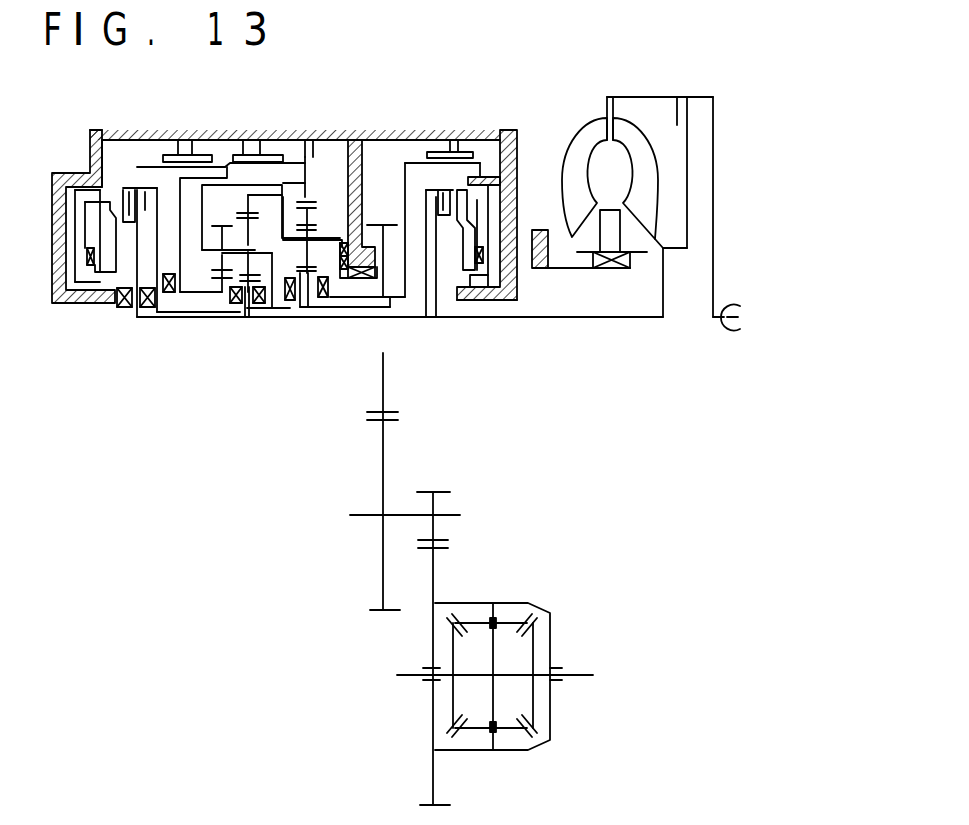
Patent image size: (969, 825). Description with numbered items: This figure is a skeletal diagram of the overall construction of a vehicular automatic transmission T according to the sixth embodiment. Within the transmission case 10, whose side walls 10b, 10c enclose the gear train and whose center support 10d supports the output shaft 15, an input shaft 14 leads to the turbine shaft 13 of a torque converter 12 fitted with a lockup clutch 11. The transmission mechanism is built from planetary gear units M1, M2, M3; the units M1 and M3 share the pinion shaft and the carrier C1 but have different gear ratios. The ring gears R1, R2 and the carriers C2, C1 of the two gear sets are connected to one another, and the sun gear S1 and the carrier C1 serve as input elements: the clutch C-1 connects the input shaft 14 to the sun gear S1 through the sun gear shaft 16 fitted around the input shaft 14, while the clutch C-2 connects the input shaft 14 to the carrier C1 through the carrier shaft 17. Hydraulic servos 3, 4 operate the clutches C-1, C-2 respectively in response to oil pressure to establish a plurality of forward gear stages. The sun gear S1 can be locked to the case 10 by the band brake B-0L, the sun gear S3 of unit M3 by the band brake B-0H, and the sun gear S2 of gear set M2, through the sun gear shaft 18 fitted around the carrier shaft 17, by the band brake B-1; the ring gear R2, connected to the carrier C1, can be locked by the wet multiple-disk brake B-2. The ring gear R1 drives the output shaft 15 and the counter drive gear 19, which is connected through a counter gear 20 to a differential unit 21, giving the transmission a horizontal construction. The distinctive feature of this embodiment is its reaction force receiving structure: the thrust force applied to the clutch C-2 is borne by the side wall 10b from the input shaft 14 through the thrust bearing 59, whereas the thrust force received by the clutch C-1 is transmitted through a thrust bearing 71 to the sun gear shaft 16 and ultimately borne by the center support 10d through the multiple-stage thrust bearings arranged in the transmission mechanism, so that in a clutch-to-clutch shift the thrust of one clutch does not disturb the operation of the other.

The transmission case 10 is at (103, 162).
The side wall of transmission case 10b is at (112, 156).
The side wall of transmission case 10c is at (488, 138).
The center support 10d is at (362, 152).
The automatic transmission T is at (405, 120).
The band brake B-0L is at (168, 139).
The band brake B-0H is at (241, 139).
The wet type multiple disk brake B-2 is at (286, 143).
The band brake B-1 is at (458, 138).
The hydraulic servo 3 is at (72, 298).
The clutch C-1 is at (145, 202).
The thrust bearing 59 is at (127, 310).
The thrust bearing 71 is at (148, 312).
The sun gear shaft 16 is at (182, 312).
The ring gear R1 is at (240, 212).
The carrier C1 is at (214, 256).
The sun gear S3 is at (217, 312).
The sun gear S1 is at (246, 313).
The planetary gear unit M3 is at (223, 351).
The planetary gear set M1 is at (252, 351).
The planetary gear set M2 is at (310, 350).
The ring gear R2 is at (314, 201).
The carrier C2 is at (298, 232).
The sun gear S2 is at (311, 317).
The output shaft 15 is at (368, 281).
The counter drive gear 19 is at (386, 224).
The sun gear shaft 18 is at (388, 312).
The carrier shaft 17 is at (423, 308).
The input shaft 14 is at (433, 310).
The clutch C-2 is at (428, 205).
The hydraulic servo 4 is at (513, 287).
The torque converter 12 is at (606, 100).
The lockup clutch 11 is at (696, 103).
The turbine shaft 13 is at (597, 318).
The counter gear 20 is at (423, 476).
The differential unit 21 is at (531, 600).